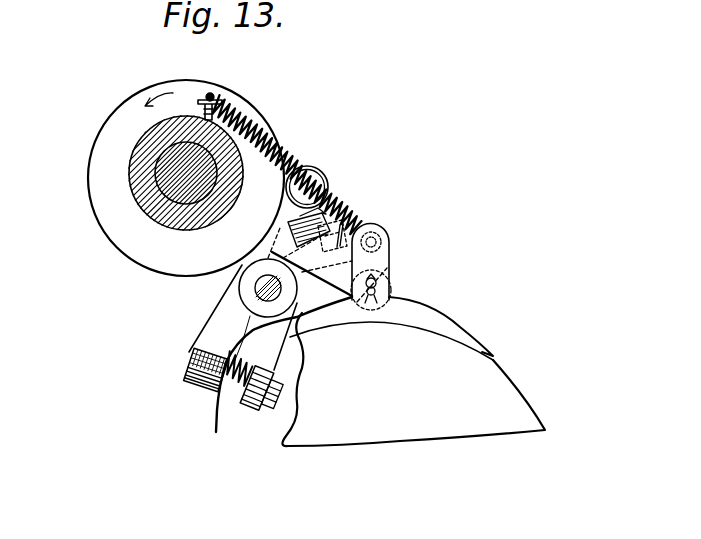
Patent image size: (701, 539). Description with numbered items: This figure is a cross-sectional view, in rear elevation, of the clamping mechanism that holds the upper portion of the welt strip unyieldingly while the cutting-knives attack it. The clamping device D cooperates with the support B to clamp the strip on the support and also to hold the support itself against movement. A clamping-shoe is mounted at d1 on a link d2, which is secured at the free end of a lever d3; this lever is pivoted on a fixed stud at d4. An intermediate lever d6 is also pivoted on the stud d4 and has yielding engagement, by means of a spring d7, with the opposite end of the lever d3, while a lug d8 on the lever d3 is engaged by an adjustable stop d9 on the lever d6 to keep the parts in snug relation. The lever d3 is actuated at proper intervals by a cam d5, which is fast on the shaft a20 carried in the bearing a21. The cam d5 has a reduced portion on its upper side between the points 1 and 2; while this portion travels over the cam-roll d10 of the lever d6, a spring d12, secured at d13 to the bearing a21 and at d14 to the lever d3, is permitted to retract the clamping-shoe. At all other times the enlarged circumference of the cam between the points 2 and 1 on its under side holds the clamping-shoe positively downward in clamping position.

The shaft a20 is at (167, 163).
The bearing a21 is at (138, 142).
The mounting of clamping-shoe d1 is at (377, 289).
The link d2 is at (390, 258).
The lever d3 is at (205, 310).
The fixed stud d4 is at (255, 289).
The cam d5 is at (120, 227).
The intermediate lever d6 is at (236, 364).
The spring d7 is at (211, 394).
The lug d8 is at (321, 222).
The adjustable stop d9 is at (346, 218).
The cam-roll d10 is at (318, 167).
The spring d12 is at (282, 160).
The spring attachment point d13 is at (212, 102).
The spring attachment point d14 is at (390, 233).
The clamping device D is at (392, 298).
The support B is at (413, 379).
The point on cam 1 is at (257, 197).
The point on cam 2 is at (147, 104).